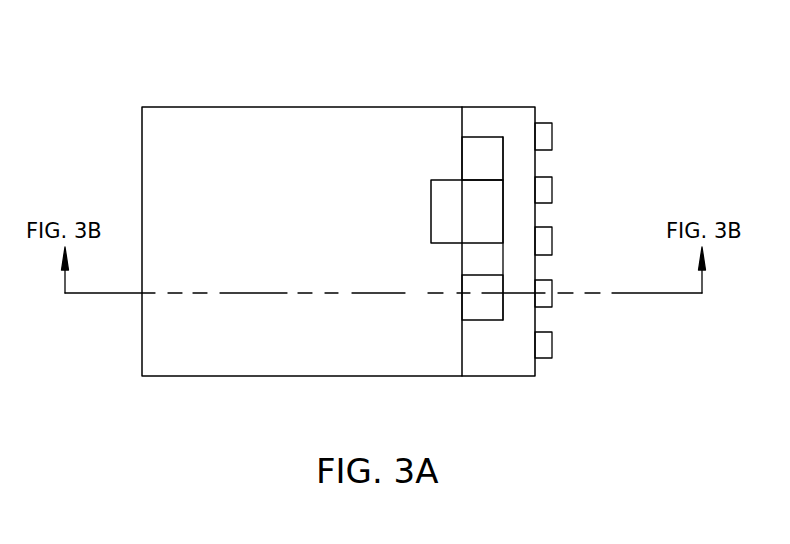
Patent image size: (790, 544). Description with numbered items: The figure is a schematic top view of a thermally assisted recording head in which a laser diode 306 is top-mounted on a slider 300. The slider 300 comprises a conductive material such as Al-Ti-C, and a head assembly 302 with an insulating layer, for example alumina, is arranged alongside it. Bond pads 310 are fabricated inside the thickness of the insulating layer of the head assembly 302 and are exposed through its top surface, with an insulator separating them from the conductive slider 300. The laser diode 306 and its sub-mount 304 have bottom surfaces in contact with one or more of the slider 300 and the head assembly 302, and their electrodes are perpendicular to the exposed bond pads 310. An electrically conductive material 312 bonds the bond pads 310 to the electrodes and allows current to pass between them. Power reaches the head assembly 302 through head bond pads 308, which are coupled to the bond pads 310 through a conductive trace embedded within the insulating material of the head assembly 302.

The slider 300 is at (218, 128).
The head assembly 302 is at (503, 118).
The sub-mount 304 is at (460, 213).
The laser diode 306 is at (480, 268).
The head bond pads 308 is at (552, 188).
The bond pads 310 is at (498, 148).
The electrically conductive material 312 is at (485, 180).